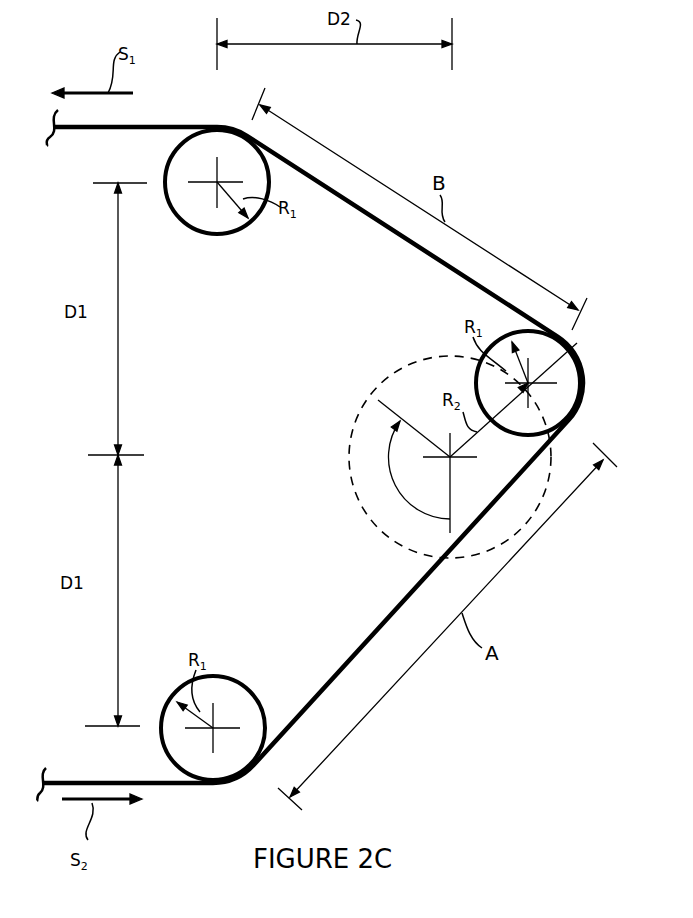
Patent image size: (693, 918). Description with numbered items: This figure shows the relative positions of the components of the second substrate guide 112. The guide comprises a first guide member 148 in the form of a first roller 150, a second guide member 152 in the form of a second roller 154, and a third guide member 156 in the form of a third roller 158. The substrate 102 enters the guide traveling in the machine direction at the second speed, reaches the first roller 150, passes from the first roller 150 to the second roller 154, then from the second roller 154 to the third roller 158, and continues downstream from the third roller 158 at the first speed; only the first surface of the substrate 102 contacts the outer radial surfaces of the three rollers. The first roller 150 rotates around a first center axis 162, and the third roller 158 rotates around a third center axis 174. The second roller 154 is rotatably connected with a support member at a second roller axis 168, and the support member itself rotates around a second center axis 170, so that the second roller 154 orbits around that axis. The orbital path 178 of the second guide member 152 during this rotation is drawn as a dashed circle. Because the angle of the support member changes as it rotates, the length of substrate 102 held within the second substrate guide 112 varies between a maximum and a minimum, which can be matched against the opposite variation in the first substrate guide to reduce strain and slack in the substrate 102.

The substrate 102 is at (168, 786).
The second substrate guide 112 is at (503, 165).
The first guide member 148 is at (242, 714).
The first roller 150 is at (265, 689).
The second guide member 152 is at (553, 400).
The second roller 154 is at (581, 383).
The third guide member 156 is at (236, 222).
The third roller 158 is at (229, 216).
The first center axis 162 is at (212, 729).
The second roller axis 168 is at (573, 345).
The second center axis 170 is at (449, 456).
The third center axis 174 is at (215, 185).
The orbital path 178 is at (362, 510).